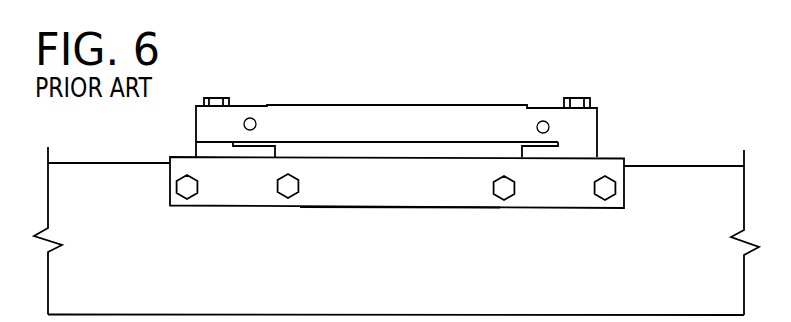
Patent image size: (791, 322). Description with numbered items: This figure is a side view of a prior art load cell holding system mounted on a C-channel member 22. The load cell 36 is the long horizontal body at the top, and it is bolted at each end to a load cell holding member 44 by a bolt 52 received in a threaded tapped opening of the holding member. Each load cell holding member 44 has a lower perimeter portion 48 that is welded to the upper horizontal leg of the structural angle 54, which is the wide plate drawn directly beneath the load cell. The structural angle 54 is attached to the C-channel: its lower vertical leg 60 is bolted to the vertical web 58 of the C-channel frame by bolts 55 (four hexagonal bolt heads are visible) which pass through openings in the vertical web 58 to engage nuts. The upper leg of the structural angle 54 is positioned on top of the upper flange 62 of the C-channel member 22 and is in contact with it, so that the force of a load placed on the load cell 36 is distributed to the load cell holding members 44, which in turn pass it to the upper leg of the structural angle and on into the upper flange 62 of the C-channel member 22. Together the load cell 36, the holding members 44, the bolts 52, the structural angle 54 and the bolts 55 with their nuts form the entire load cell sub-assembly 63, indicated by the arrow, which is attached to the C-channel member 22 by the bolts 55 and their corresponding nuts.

The C-channel member 22 is at (678, 205).
The load cell 36 is at (397, 118).
The load cell holding member 44 is at (204, 149).
The lower perimeter portion 48 is at (237, 157).
The bolt 52 is at (582, 97).
The structural angle 54 is at (360, 190).
The bolt 55 is at (188, 192).
The vertical web 58 is at (78, 203).
The lower vertical leg 60 is at (413, 183).
The upper flange 62 is at (709, 165).
The load cell sub-assembly 63 is at (610, 110).